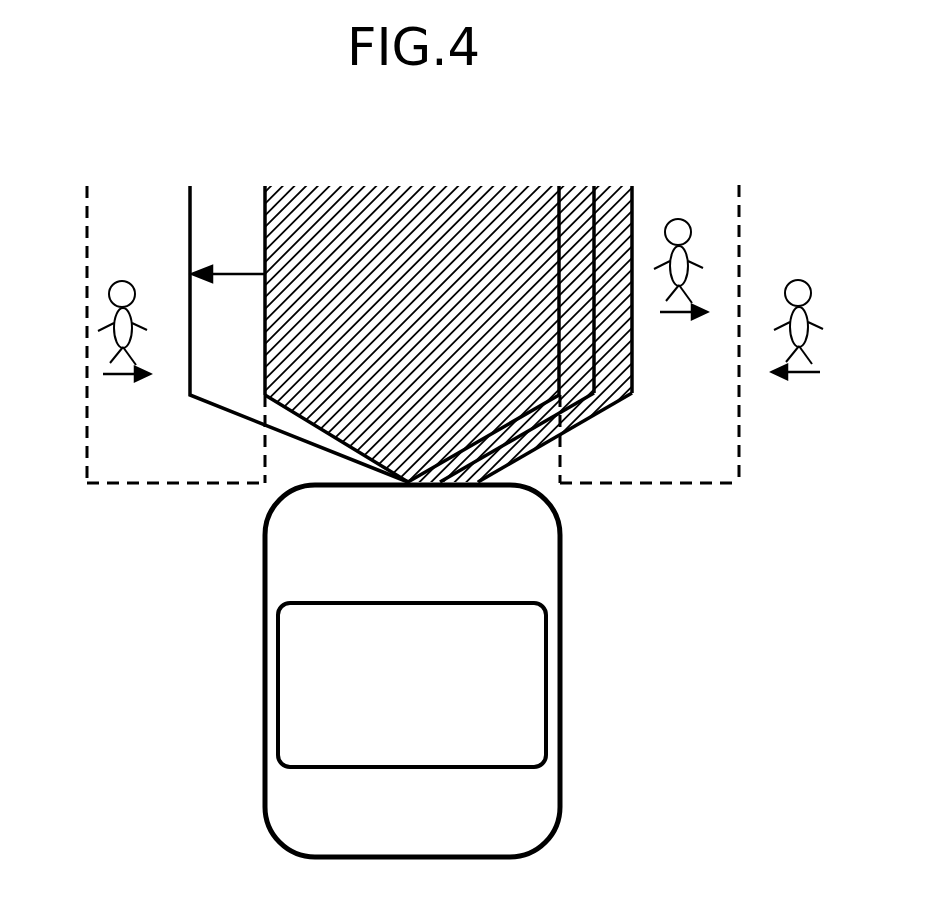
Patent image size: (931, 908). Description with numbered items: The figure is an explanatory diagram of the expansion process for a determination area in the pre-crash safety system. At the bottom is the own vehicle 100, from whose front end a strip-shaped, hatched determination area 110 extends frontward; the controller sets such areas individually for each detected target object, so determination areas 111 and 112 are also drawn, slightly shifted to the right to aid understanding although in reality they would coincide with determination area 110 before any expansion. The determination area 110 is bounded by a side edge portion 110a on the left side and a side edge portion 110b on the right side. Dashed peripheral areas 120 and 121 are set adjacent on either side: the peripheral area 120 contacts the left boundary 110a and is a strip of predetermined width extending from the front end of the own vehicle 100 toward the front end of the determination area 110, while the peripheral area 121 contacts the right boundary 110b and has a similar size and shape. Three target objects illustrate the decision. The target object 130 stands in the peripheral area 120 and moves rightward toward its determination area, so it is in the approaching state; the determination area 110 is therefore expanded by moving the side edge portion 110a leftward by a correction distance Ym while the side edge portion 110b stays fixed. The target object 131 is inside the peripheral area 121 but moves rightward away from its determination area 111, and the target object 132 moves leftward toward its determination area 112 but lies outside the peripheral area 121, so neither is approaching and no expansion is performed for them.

The own vehicle 100 is at (560, 583).
The determination area 110 is at (402, 210).
The side edge portion on the left side 110a is at (265, 186).
The side edge portion on the right side 110b is at (560, 186).
The determination area 111 is at (575, 208).
The determination area 112 is at (612, 208).
The peripheral area 120 is at (107, 238).
The peripheral area 121 is at (710, 202).
The target object 130 is at (112, 312).
The target object 131 is at (688, 247).
The target object 132 is at (807, 312).